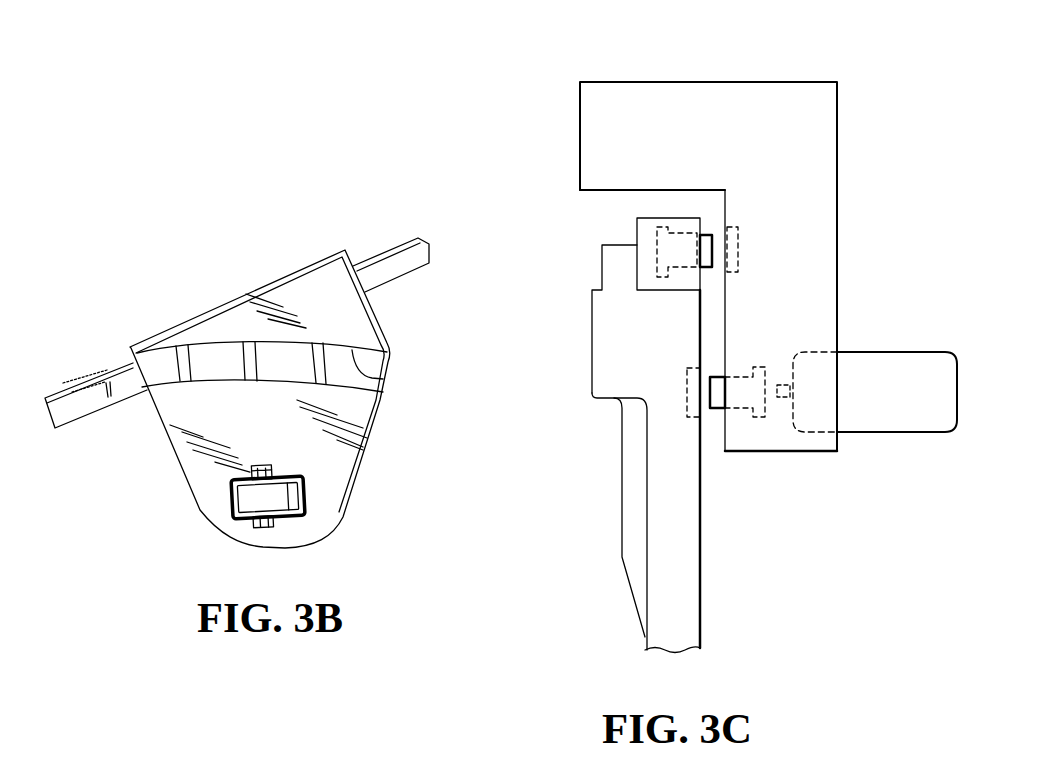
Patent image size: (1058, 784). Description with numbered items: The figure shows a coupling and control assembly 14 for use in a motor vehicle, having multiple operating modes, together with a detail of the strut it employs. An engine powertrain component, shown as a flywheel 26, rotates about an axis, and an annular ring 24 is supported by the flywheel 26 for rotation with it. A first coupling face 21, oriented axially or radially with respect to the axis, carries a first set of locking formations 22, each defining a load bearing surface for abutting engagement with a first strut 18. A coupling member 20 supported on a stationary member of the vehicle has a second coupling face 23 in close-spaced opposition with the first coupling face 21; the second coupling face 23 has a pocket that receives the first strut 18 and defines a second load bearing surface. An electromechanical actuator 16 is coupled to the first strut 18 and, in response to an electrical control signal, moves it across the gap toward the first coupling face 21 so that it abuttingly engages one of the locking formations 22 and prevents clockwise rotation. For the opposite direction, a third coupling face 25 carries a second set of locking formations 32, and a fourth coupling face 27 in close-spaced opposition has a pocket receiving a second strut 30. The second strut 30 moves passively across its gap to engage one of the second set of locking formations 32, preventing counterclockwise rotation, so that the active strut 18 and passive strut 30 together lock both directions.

In FIG. 3C, the coupling and control assembly 14 is at (878, 66).
In FIG. 3C, the electromechanical actuator 16 is at (873, 352).
In FIG. 3B, the first strut 18 is at (262, 499).
In FIG. 3C, the first strut 18 is at (733, 377).
In FIG. 3C, the coupling member 20 is at (802, 453).
In FIG. 3C, the first coupling face 21 is at (702, 538).
In FIG. 3C, the first set of locking formations 22 is at (683, 403).
In FIG. 3C, the second coupling face 23 is at (725, 311).
In FIG. 3C, the annular ring 24 is at (648, 218).
In FIG. 3C, the third coupling face 25 is at (623, 242).
In FIG. 3C, the flywheel 26 is at (703, 607).
In FIG. 3C, the fourth coupling face 27 is at (600, 192).
In FIG. 3C, the second strut 30 is at (693, 221).
In FIG. 3B, the second set of locking formations 32 is at (386, 380).
In FIG. 3C, the second set of locking formations 32 is at (742, 250).